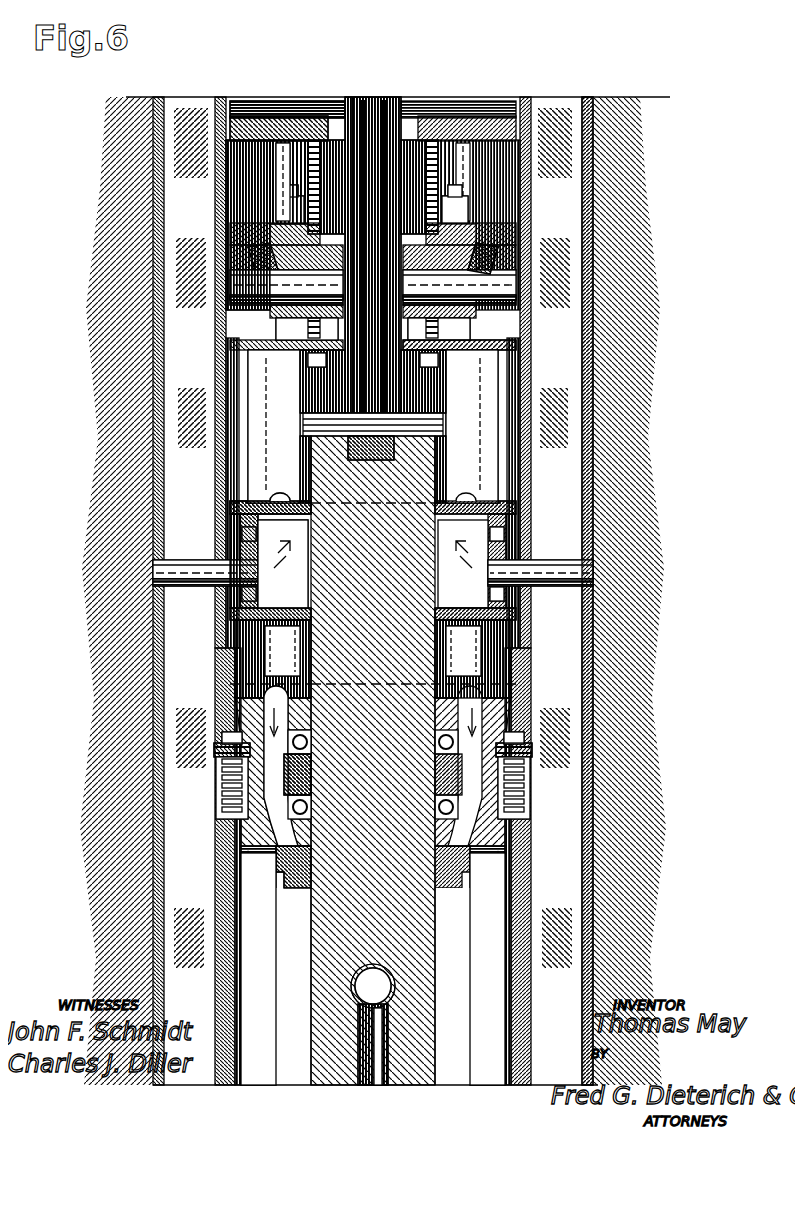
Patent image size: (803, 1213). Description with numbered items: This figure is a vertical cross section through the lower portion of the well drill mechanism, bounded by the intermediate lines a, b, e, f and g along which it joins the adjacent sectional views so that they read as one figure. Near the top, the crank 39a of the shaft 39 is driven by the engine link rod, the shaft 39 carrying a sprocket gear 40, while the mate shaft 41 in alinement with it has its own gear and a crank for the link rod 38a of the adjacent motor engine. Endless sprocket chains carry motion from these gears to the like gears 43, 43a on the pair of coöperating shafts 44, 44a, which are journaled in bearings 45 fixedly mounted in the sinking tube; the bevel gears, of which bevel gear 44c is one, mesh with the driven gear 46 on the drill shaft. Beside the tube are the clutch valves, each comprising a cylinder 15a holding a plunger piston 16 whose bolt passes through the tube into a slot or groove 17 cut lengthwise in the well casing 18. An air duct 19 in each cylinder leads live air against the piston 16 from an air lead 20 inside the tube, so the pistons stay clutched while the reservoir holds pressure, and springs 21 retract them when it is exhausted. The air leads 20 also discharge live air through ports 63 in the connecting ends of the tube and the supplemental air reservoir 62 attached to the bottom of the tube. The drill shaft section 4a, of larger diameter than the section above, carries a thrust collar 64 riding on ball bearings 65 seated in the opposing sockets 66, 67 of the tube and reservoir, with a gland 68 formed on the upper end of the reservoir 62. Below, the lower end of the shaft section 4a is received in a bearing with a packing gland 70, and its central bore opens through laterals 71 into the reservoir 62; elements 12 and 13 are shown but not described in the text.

The crank 39a is at (272, 83).
The shaft 39 is at (312, 106).
The sprocket gear 40 is at (352, 104).
The mate shaft 41 is at (418, 96).
The link rod 38a is at (455, 100).
The bearings 45 is at (224, 262).
The coöperating shaft 44 is at (235, 290).
The sprocket gear 43 is at (306, 302).
The sprocket gear 43a is at (439, 313).
The bevel gear 44c is at (522, 296).
The driven gear 46 is at (500, 314).
The air lead 20 is at (258, 420).
The ports 63 is at (404, 432).
The air duct 19 is at (262, 492).
The packing bar 12 is at (222, 497).
The spring 21 is at (234, 530).
The plunger piston 16 is at (168, 566).
The slot or groove 17 is at (574, 618).
The cylinder 15a is at (284, 605).
The valve block 13 is at (240, 690).
The socket 66 is at (282, 698).
The ball bearings 65 is at (300, 734).
The thrust collar 64 is at (302, 760).
The socket 67 is at (300, 808).
The well casing 18 is at (576, 764).
The gland 68 is at (293, 876).
The drill shaft section 4a is at (305, 922).
The supplemental air reservoir 62 is at (482, 928).
The laterals 71 is at (373, 986).
The packing gland 70 is at (350, 1026).
The intermediate line a is at (371, 771).
The intermediate line b is at (204, 291).
The intermediate line e is at (128, 93).
The intermediate line f is at (663, 93).
The intermediate line g is at (124, 1083).